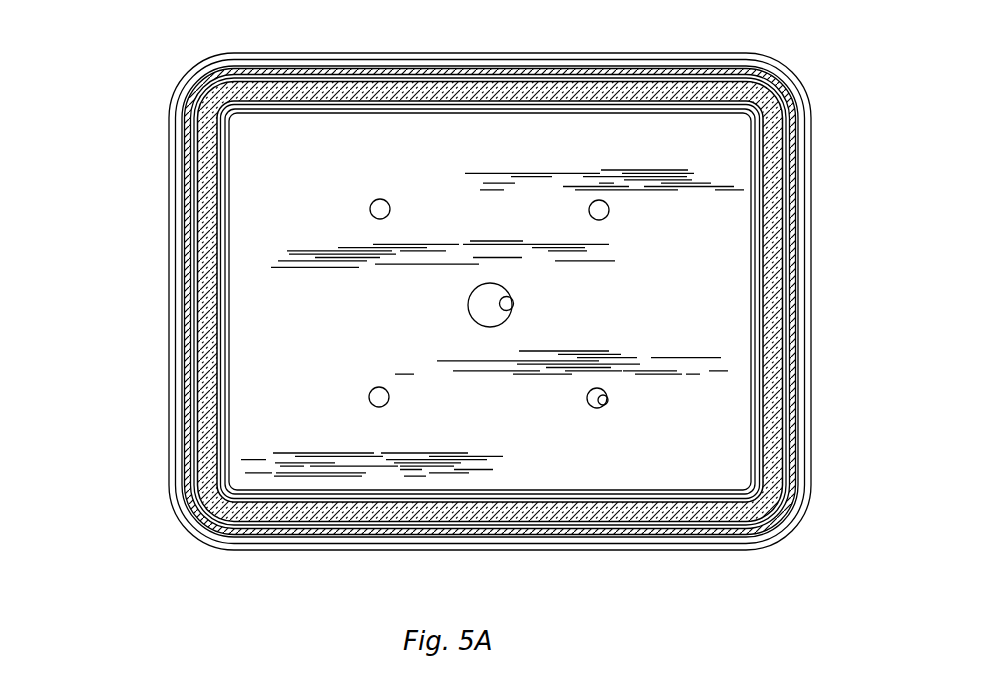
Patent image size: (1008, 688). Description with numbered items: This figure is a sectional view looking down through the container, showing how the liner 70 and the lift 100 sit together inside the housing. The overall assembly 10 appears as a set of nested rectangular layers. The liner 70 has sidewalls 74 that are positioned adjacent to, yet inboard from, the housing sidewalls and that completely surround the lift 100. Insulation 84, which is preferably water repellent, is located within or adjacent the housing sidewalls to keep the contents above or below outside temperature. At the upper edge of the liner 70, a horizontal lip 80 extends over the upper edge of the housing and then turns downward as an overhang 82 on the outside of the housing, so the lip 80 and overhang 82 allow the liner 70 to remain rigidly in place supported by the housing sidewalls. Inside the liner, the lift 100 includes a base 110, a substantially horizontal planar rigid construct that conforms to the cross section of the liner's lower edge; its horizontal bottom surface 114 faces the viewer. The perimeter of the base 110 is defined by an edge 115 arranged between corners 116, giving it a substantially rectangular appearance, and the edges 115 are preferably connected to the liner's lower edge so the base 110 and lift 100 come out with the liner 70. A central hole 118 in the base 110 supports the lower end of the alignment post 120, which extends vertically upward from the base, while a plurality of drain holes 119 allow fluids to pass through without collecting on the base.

The vehicle load floor assembly 10 is at (134, 80).
The liner 70 is at (803, 170).
The sidewalls 74 is at (783, 235).
The horizontal lip 80 is at (785, 526).
The overhang 82 is at (810, 415).
The insulation 84 is at (780, 335).
The lift 100 is at (214, 267).
The base 110 is at (393, 147).
The horizontal bottom surface 114 is at (505, 227).
The edge 115 is at (474, 115).
The corners 116 is at (239, 115).
The central hole 118 is at (507, 312).
The drain holes 119 is at (605, 403).
The alignment post 120 is at (477, 310).